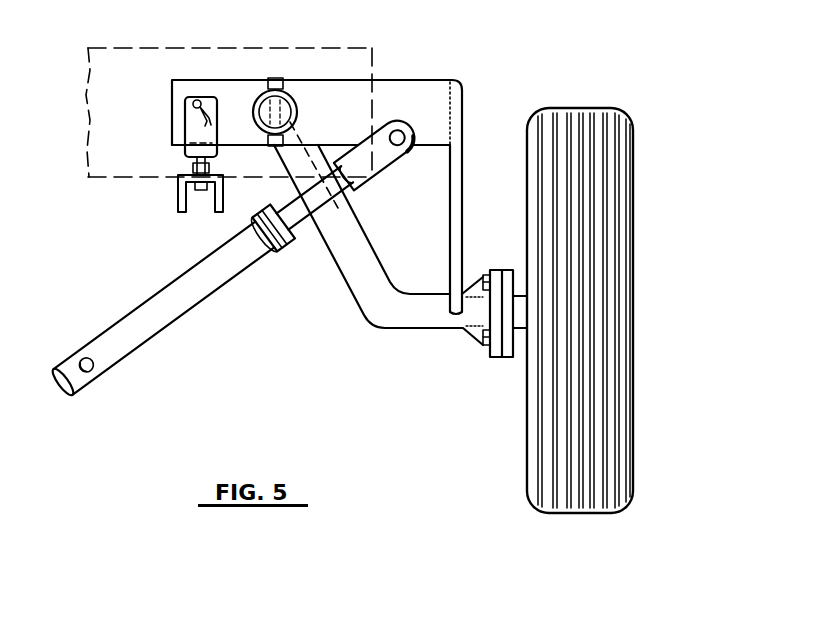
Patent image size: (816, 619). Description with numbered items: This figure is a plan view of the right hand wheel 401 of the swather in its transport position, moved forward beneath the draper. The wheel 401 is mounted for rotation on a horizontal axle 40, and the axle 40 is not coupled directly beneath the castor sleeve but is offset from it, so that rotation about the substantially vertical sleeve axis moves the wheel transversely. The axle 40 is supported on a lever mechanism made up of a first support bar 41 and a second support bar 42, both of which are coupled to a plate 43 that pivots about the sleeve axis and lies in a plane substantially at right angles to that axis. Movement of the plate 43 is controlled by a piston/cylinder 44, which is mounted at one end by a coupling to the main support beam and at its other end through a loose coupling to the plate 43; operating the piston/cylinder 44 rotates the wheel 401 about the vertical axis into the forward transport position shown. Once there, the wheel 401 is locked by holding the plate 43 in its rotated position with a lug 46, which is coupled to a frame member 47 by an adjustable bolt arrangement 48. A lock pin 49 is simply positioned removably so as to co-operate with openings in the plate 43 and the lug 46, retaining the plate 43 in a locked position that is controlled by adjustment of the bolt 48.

The axle 40 is at (521, 318).
The right hand wheel 401 is at (551, 427).
The first support bar 41 is at (388, 303).
The second support bar 42 is at (463, 225).
The plate 43 is at (413, 88).
The piston/cylinder 44 is at (175, 307).
The lug 46 is at (189, 124).
The frame member 47 is at (181, 201).
The adjustable bolt arrangement 48 is at (194, 167).
The lock pin 49 is at (213, 66).